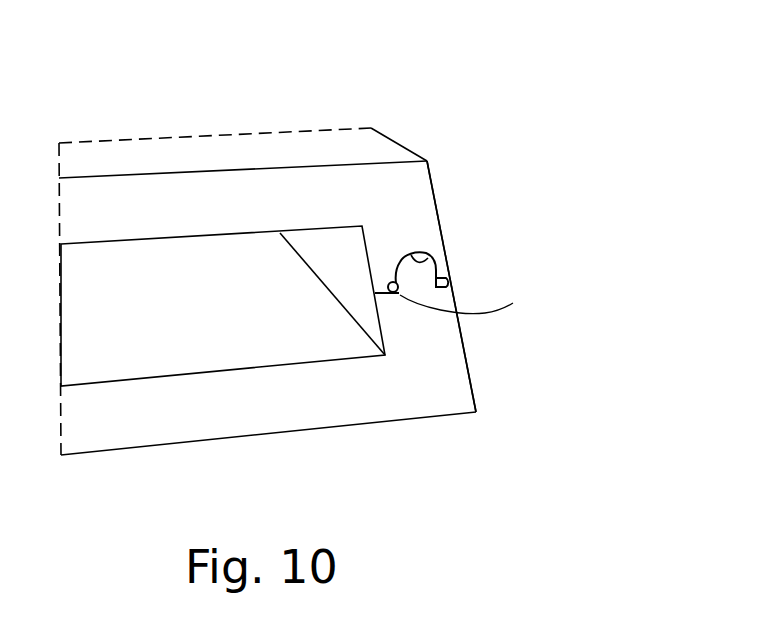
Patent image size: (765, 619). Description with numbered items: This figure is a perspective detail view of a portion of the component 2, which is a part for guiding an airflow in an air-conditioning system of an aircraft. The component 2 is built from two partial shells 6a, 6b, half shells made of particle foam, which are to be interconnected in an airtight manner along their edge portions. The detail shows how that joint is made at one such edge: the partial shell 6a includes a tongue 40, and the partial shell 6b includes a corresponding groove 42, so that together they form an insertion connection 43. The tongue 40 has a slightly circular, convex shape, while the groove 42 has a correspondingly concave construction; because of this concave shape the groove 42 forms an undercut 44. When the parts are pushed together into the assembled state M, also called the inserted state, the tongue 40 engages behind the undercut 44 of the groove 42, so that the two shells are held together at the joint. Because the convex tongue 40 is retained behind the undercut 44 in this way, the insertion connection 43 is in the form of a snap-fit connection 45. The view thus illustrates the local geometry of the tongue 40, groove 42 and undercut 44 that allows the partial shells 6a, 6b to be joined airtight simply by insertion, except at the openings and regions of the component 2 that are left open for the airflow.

The component 2 is at (146, 105).
The assembled state M is at (372, 106).
The partial shell 6a is at (274, 414).
The partial shell 6b is at (231, 157).
The tongue 40 is at (446, 267).
The groove 42 is at (431, 258).
The undercut 44 is at (448, 285).
The insertion connection 43 is at (489, 322).
The snap-fit connection 45 is at (489, 322).